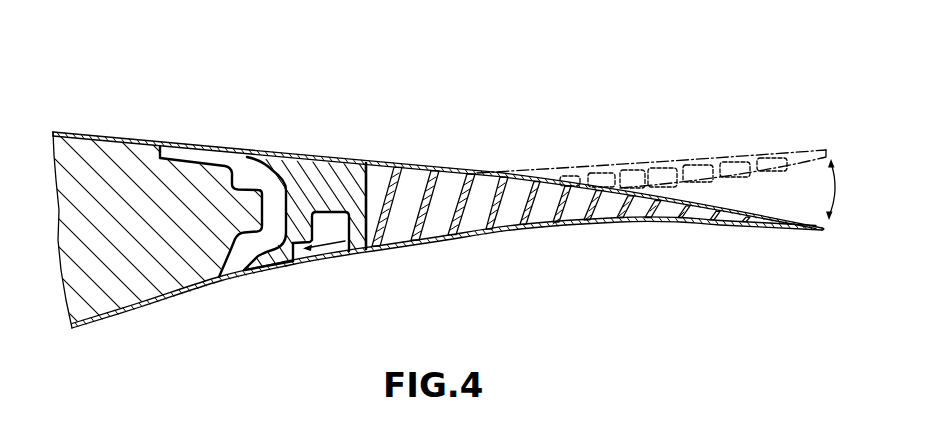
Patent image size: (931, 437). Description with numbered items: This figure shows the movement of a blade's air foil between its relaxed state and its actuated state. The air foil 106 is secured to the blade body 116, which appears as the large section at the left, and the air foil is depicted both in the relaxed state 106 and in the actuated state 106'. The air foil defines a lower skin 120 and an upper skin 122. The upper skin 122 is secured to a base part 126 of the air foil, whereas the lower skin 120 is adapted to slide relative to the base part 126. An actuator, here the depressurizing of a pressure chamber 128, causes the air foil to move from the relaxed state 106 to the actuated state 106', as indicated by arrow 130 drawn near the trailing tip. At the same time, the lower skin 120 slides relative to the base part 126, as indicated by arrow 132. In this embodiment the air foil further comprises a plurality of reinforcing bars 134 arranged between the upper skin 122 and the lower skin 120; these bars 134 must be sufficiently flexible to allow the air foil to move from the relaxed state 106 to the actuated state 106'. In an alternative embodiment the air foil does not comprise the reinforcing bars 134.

The blade body 116 is at (133, 170).
The base part 126 is at (318, 180).
The pressure chamber 128 is at (331, 222).
The arrow indicating sliding of the lower skin 132 is at (344, 243).
The upper skin 122 is at (445, 162).
The reinforcing bars 134 is at (593, 196).
The lower skin 120 is at (505, 243).
The air foil in relaxed state 106 is at (651, 160).
The air foil in actuated state 106' is at (751, 244).
The arrow indicating movement of the air foil 130 is at (843, 202).